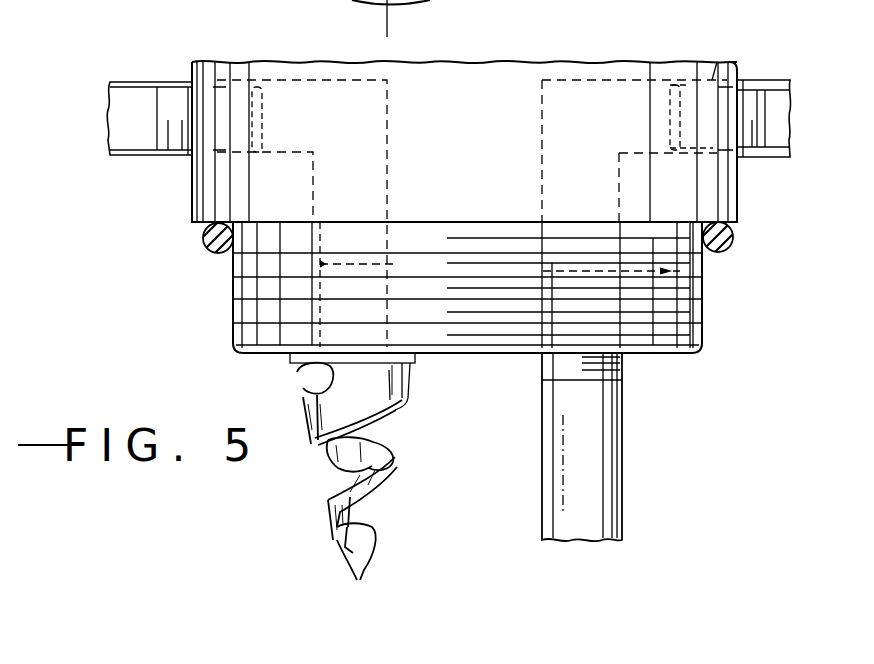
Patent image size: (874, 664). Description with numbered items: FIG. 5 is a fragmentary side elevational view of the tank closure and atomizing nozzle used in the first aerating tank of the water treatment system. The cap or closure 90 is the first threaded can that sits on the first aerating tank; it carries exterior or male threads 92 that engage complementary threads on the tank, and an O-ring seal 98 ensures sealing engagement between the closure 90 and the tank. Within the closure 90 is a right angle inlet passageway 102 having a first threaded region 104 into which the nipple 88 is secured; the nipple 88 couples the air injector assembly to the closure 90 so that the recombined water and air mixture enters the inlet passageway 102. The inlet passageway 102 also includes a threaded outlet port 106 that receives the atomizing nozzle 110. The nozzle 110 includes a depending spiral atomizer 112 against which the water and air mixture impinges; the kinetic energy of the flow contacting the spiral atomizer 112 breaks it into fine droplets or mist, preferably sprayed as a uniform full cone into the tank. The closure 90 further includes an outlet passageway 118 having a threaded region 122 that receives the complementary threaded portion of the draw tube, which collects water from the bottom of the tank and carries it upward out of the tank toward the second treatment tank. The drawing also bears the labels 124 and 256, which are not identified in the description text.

The nipple 88 is at (132, 144).
The cap or closure 90 is at (505, 88).
The exterior threads 92 is at (232, 297).
The O-ring seal 98 is at (200, 240).
The right angle inlet passageway 102 is at (396, 112).
The first threaded region 104 is at (268, 60).
The threaded outlet port 106 is at (603, 411).
The atomizing nozzle 110 is at (279, 366).
The spiral atomizer 112 is at (383, 458).
The outlet passageway 118 is at (626, 80).
The threaded region 122 is at (705, 289).
The support arm 124 is at (715, 60).
The shaft 256 is at (470, 2).